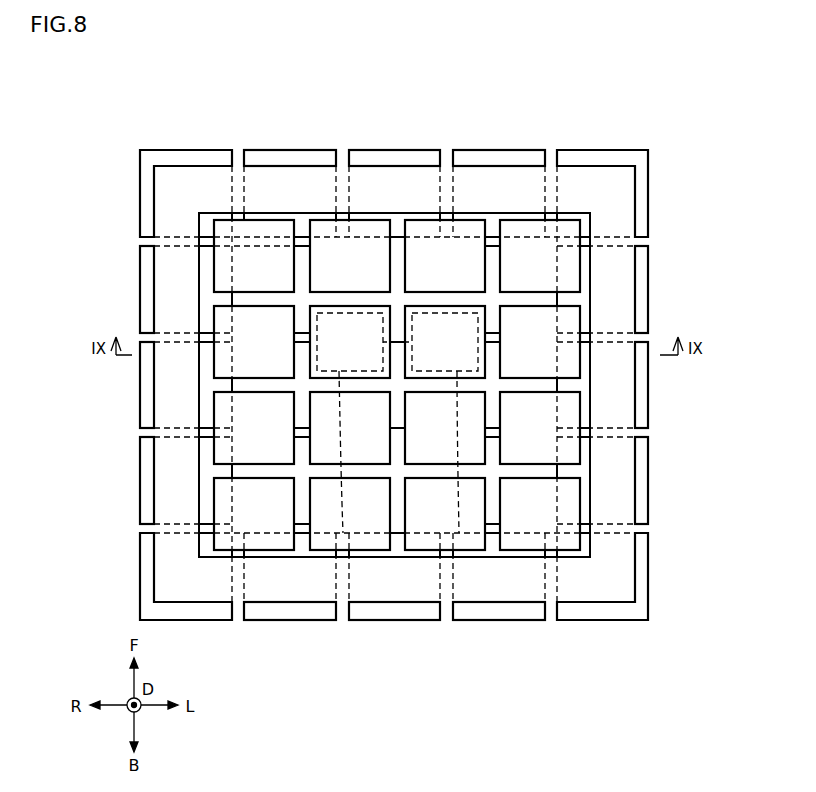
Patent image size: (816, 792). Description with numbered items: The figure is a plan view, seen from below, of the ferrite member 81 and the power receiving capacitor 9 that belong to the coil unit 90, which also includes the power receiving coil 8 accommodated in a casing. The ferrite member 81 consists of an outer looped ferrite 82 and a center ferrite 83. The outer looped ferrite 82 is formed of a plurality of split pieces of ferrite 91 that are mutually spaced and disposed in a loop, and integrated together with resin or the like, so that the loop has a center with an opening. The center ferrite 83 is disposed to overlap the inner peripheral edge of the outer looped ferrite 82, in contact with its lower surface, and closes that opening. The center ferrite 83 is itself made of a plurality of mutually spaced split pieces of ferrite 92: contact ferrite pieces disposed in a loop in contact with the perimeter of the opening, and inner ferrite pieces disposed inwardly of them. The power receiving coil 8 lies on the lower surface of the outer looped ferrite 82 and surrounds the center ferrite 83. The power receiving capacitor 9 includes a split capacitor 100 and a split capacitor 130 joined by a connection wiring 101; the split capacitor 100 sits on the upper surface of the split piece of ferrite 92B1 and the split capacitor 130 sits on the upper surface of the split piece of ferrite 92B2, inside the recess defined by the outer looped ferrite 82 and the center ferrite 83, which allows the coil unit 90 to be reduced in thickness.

The power receiving coil 8 is at (366, 192).
The power receiving capacitor 9 is at (480, 660).
The ferrite member 81 is at (256, 102).
The outer looped ferrite 82 is at (165, 160).
The center ferrite 83 is at (245, 245).
The coil unit 90 is at (372, 70).
The split pieces of ferrite 91 is at (421, 329).
The split pieces of ferrite 92 is at (542, 323).
The split piece of ferrite 92B1 is at (372, 306).
The split piece of ferrite 92B2 is at (468, 306).
The split capacitor 100 is at (343, 533).
The connection wiring 101 is at (397, 342).
The split capacitor 130 is at (459, 533).